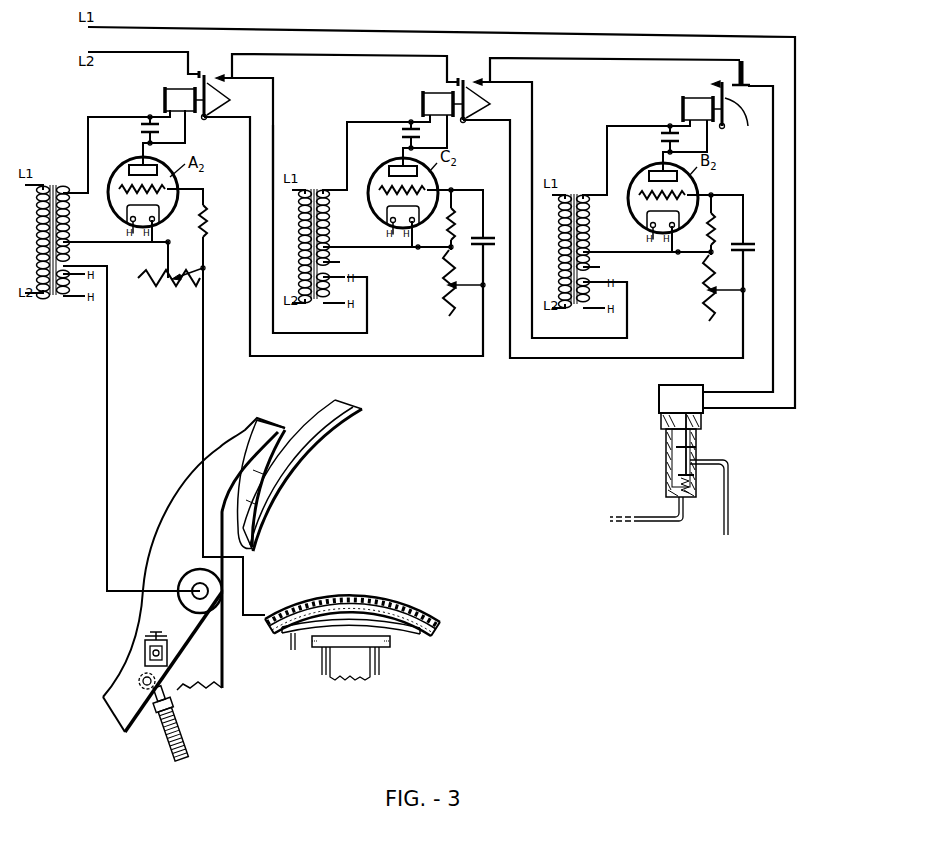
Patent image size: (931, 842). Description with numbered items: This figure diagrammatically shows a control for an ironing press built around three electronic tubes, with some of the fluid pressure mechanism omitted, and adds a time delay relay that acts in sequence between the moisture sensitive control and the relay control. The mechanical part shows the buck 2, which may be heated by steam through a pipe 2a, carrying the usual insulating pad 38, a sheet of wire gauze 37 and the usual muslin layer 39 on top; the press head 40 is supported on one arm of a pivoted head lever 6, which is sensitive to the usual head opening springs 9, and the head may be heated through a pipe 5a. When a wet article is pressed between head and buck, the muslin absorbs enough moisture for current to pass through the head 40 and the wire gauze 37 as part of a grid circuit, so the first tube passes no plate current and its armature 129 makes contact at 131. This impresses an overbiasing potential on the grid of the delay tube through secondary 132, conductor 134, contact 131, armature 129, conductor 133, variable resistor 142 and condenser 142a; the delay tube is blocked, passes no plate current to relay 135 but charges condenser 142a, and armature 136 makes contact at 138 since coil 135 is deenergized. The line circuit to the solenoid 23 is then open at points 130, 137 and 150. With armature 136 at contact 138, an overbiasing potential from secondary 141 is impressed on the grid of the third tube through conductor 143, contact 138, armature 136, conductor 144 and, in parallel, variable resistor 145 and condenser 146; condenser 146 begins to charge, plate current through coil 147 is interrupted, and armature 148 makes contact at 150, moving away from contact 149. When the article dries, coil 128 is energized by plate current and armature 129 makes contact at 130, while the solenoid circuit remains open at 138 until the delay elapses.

The coil 128 is at (165, 100).
The armature 129 is at (228, 97).
The contact 130 is at (197, 72).
The contact 131 is at (226, 74).
The secondary 132 is at (340, 262).
The conductor 133 is at (288, 358).
The conductor 134 is at (273, 125).
The relay 135 is at (423, 103).
The armature 136 is at (487, 101).
The contact 137 is at (456, 76).
The contact 138 is at (483, 78).
The secondary 141 is at (600, 267).
The variable resistor 142 is at (443, 270).
The condenser 142a is at (490, 232).
The conductor 143 is at (532, 130).
The conductor 144 is at (571, 360).
The variable resistor 145 is at (702, 270).
The condenser 146 is at (751, 238).
The coil 147 is at (683, 106).
The armature 148 is at (740, 123).
The contact 149 is at (712, 84).
The contact 150 is at (747, 62).
The solenoid 23 is at (660, 398).
The head lever 6 is at (175, 505).
The press head 40 is at (300, 460).
The pipe 5a is at (243, 553).
The pad 38 is at (296, 600).
The wire gauze 37 is at (334, 598).
The muslin layer 39 is at (369, 598).
The buck 2 is at (352, 622).
The pipe 2a is at (292, 651).
The head opening spring 9 is at (163, 757).